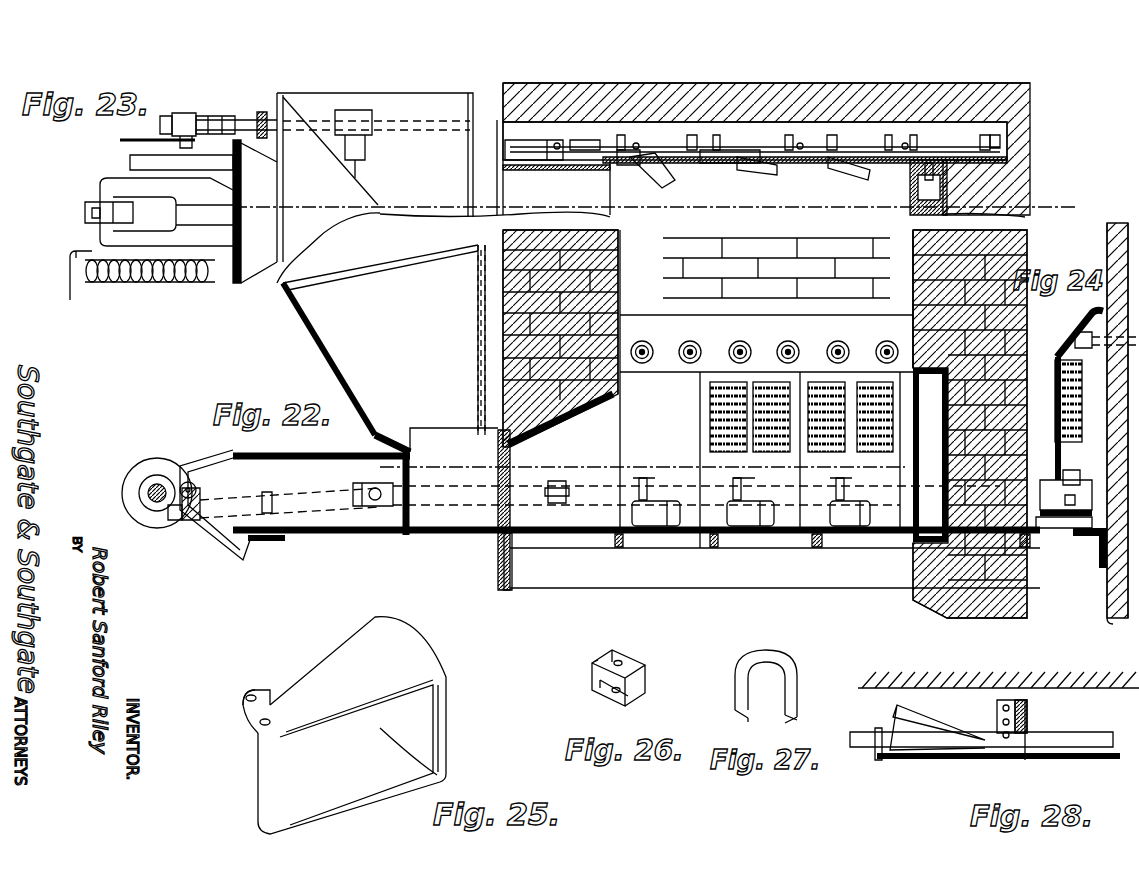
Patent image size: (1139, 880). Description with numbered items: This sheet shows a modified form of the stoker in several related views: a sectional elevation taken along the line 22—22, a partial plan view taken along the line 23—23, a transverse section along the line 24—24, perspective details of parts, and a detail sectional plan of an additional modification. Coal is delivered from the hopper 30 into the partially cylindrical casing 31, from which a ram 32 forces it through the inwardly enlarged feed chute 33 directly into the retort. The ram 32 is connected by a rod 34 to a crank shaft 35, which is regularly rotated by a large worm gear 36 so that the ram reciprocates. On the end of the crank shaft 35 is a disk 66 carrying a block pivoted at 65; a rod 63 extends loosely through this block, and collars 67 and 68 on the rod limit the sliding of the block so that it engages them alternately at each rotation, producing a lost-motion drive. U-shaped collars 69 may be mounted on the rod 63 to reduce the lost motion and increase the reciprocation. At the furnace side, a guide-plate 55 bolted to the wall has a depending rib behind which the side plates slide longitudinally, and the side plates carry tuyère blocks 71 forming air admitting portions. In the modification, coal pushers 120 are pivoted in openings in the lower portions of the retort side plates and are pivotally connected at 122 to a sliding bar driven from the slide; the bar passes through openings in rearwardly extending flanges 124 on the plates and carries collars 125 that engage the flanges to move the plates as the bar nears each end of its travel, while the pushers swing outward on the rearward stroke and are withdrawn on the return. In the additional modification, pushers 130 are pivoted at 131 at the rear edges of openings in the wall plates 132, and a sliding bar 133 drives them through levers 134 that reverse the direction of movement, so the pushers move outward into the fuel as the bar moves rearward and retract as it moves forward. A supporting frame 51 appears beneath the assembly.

In FIG. 23, the section line 22— 22 is at (135, 176).
In FIG. 22, the section line 22— 22 is at (1085, 195).
In FIG. 23, the section line 23— 23 is at (355, 256).
In FIG. 24, the section line 23— 23 is at (1038, 476).
In FIG. 22, the section line 24— 24 is at (855, 211).
In FIG. 23, the hopper 30 is at (302, 302).
In FIG. 22, the hopper 30 is at (384, 340).
In FIG. 22, the partially cylindrical casing 31 is at (432, 537).
In FIG. 22, the ram 32 is at (388, 457).
In FIG. 22, the feed chute 33 is at (560, 437).
In FIG. 23, the rod 34 is at (203, 210).
In FIG. 23, the crank shaft 35 is at (100, 233).
In FIG. 22, the crank shaft 35 is at (143, 493).
In FIG. 23, the worm gear 36 is at (170, 281).
In FIG. 22, the supporting frame 51 is at (538, 549).
In FIG. 22, the guide-plate 55 is at (764, 342).
In FIG. 23, the rod 63 is at (243, 118).
In FIG. 22, the rod 63 is at (288, 497).
In FIG. 23, the pivot 65 is at (183, 113).
In FIG. 23, the disk 66 is at (137, 140).
In FIG. 23, the collar 67 is at (163, 114).
In FIG. 23, the collar 68 is at (264, 112).
In FIG. 23, the U-shaped collar 69 is at (217, 118).
In FIG. 27, the U-shaped collar 69 is at (786, 672).
In FIG. 22, the tuyère block 71 is at (712, 387).
In FIG. 25, the coal pusher 120 is at (428, 665).
In FIG. 25, the pivotal connection 122 is at (252, 698).
In FIG. 22, the flange 124 is at (990, 132).
In FIG. 22, the collar 125 is at (717, 135).
In FIG. 26, the collar 125 is at (622, 656).
In FIG. 28, the pusher 130 is at (927, 727).
In FIG. 28, the pivot 131 is at (990, 760).
In FIG. 28, the wall plate 132 is at (878, 760).
In FIG. 28, the sliding bar 133 is at (1100, 740).
In FIG. 28, the lever 134 is at (1020, 712).